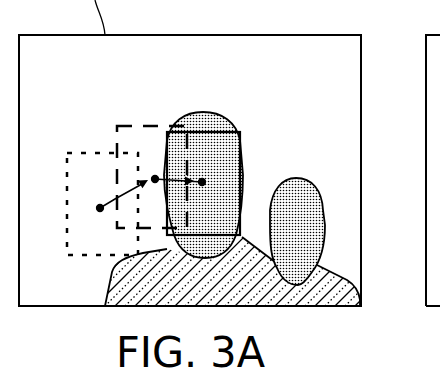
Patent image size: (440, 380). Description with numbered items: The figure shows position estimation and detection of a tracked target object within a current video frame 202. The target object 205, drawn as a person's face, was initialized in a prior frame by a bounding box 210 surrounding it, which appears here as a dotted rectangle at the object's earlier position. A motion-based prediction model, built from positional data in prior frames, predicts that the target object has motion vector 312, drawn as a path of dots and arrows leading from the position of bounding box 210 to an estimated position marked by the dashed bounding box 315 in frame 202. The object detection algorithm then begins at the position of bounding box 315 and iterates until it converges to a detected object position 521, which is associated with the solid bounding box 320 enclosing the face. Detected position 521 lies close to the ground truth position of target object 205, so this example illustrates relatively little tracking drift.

The current video frame 202 is at (73, 379).
The target object 205 is at (221, 119).
The bounding box 210 is at (67, 152).
The motion vector 312 is at (103, 201).
The bounding box 315 is at (118, 126).
The bounding box 320 is at (205, 112).
The detected object position 521 is at (205, 182).